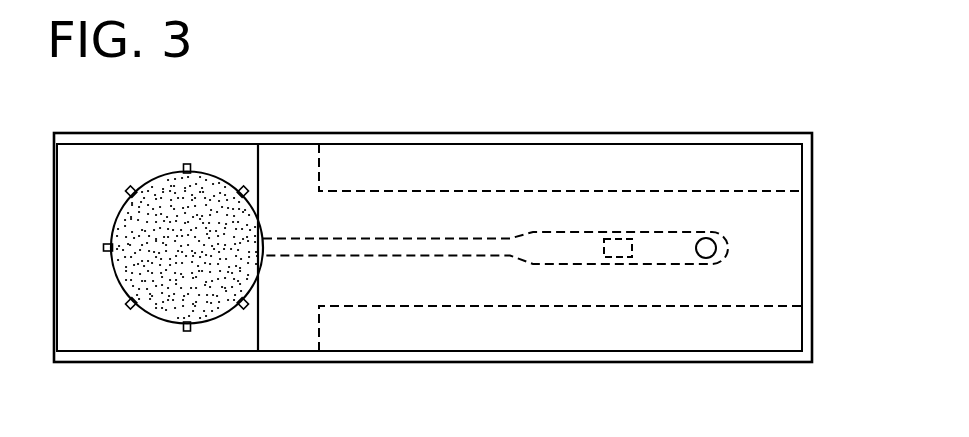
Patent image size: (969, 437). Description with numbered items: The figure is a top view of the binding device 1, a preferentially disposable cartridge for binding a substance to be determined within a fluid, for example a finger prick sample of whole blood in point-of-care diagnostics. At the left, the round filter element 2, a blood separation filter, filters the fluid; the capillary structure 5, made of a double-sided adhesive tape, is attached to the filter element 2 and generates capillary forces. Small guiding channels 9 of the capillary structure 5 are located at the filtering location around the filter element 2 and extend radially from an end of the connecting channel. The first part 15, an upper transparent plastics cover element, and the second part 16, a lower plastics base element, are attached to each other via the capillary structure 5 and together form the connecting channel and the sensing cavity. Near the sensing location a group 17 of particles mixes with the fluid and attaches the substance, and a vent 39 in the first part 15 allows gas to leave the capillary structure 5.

The binding device 1 is at (767, 105).
The filter element 2 is at (210, 298).
The capillary structure 5 is at (135, 342).
The guiding channels 9 is at (104, 247).
The first part 15 is at (645, 352).
The second part 16 is at (559, 363).
The group of particles 17 is at (617, 247).
The vent 39 is at (705, 248).